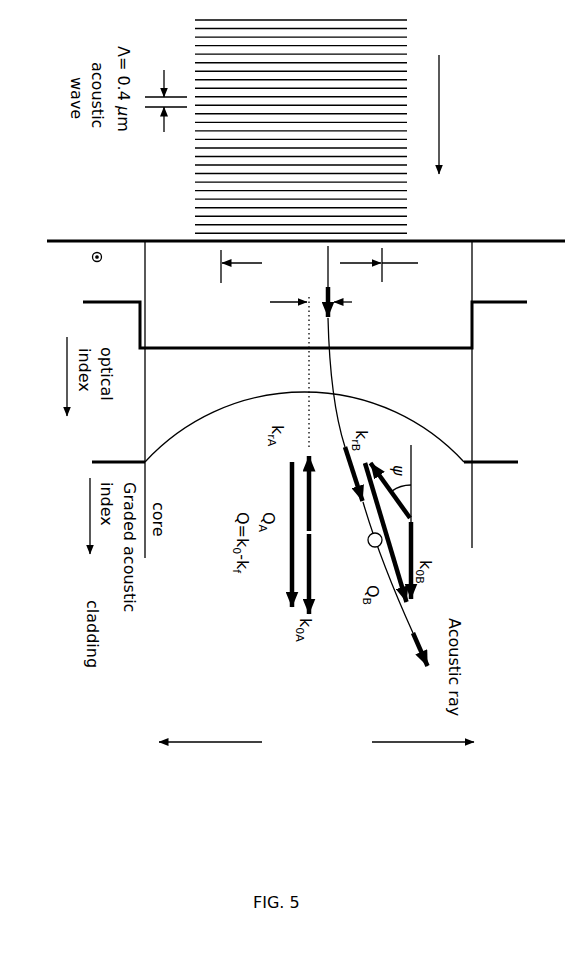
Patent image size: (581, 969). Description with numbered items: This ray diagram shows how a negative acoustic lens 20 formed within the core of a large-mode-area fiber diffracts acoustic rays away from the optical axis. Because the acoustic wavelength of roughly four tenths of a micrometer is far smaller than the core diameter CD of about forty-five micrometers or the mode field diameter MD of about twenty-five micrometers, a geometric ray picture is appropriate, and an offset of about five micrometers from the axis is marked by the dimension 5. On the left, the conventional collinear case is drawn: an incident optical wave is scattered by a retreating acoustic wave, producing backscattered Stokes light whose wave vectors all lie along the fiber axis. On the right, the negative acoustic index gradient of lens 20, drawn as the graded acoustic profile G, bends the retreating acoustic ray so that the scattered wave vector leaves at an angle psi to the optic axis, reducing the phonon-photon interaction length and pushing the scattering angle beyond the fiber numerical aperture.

The acoustic lens 20 is at (507, 463).
The profile G is at (183, 429).
The mode diameter dimension MD is at (344, 279).
The cladding diameter dimension CD is at (316, 732).
The ray offset dimension 5 is at (337, 305).